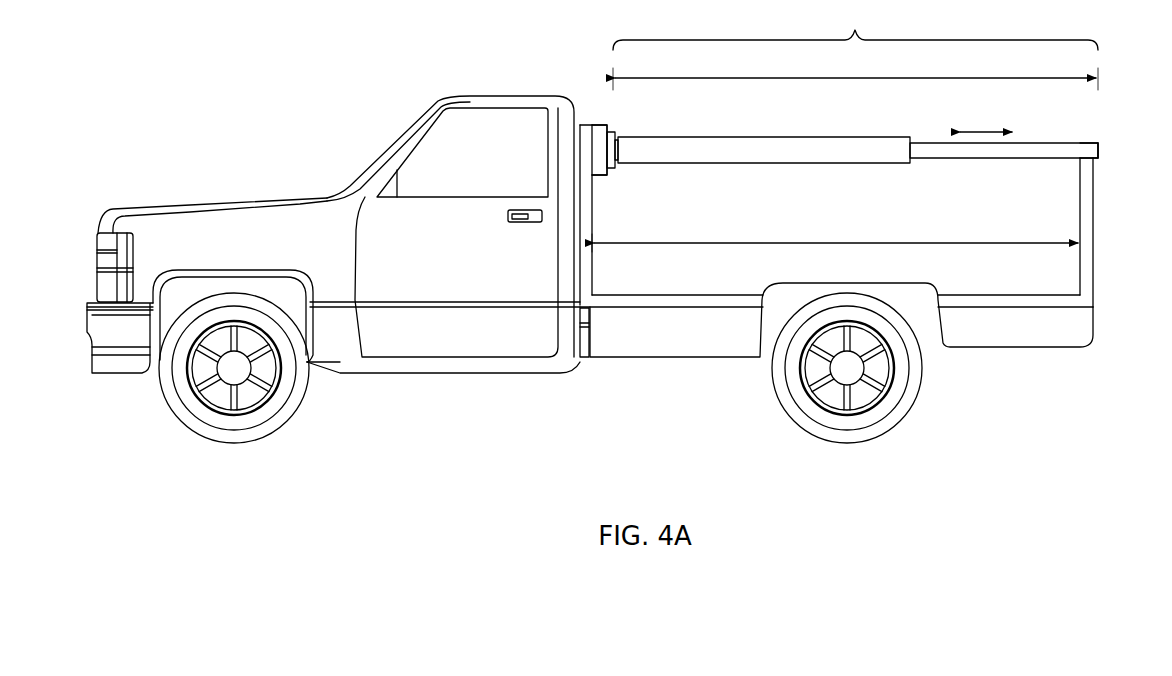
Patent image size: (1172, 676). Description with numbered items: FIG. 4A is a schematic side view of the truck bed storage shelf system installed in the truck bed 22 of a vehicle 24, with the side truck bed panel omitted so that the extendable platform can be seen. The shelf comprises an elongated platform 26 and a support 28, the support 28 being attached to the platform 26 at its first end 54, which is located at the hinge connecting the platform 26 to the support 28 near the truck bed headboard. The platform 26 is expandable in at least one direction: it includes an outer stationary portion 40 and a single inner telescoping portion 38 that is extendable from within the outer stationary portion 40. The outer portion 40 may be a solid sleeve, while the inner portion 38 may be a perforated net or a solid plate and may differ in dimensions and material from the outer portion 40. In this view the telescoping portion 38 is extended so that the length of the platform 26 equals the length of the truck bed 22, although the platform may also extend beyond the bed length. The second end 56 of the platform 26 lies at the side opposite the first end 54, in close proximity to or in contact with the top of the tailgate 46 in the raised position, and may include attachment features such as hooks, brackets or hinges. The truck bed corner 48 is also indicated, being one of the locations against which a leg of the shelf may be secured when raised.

The truck bed 22 is at (1030, 297).
The vehicle 24 is at (458, 96).
The platform 26 is at (512, 23).
The support 28 is at (604, 176).
The inner telescoping portion 38 is at (750, 165).
The outer stationary portion 40 is at (1003, 160).
The tailgate 46 is at (618, 164).
The truck bed corner 48 is at (1100, 151).
The first end 54 is at (620, 143).
The second end 56 is at (1085, 148).